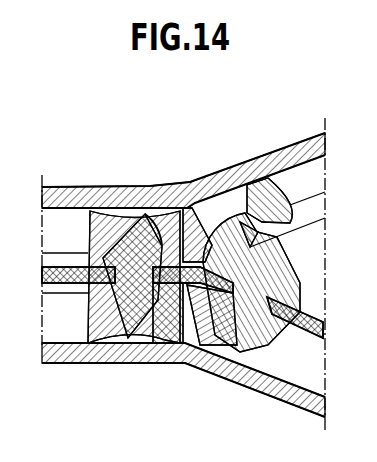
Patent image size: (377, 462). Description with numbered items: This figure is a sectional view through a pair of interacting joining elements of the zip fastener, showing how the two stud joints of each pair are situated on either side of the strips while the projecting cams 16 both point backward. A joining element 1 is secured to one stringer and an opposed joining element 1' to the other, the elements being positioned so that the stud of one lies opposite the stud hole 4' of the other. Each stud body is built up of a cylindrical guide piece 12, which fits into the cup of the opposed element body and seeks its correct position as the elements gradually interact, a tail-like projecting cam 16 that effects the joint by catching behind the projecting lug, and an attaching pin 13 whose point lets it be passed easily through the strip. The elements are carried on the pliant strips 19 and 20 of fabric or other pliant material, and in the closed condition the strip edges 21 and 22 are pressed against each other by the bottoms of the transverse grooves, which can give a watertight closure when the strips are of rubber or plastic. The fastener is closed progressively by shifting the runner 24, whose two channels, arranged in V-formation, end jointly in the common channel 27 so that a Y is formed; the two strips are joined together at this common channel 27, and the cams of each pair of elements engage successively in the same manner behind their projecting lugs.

The opposed joining element 1' is at (183, 263).
The projecting cam 16 is at (118, 220).
The guide piece 12 is at (142, 240).
The stud hole of the opposed element 4' is at (210, 155).
The pliant strip 20 is at (303, 227).
The strip edge 22 is at (58, 262).
The strip edge 21 is at (58, 292).
The common channel 27 is at (70, 325).
The attaching pin 13 is at (120, 333).
The joining element 1 is at (187, 330).
The runner 24 is at (197, 322).
The pliant strip 19 is at (302, 396).